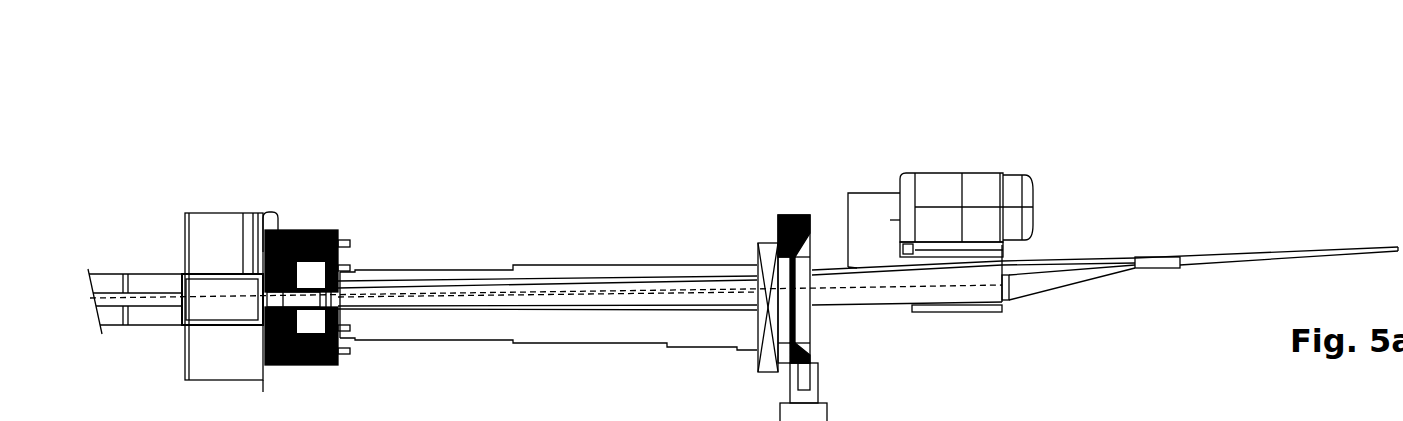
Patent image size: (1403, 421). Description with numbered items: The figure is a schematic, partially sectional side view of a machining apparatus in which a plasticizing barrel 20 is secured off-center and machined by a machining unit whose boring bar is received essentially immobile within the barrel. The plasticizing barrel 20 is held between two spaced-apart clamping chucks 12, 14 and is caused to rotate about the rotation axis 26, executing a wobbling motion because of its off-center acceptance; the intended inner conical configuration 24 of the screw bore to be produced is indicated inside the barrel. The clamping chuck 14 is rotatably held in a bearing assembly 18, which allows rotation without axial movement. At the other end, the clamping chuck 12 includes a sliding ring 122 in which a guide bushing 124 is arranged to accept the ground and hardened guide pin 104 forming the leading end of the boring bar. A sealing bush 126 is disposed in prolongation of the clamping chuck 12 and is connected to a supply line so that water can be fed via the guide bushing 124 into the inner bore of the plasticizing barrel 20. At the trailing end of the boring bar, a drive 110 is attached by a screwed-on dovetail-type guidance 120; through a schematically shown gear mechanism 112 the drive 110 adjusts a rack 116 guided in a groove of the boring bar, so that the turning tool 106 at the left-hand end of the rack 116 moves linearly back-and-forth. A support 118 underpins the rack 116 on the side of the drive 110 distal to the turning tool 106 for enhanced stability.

The clamping chuck 12 is at (287, 233).
The clamping chuck 14 is at (789, 217).
The bearing assembly 18 is at (818, 395).
The plasticizing barrel 20 is at (554, 325).
The inner conical configuration 24 is at (638, 278).
The rotation axis 26 is at (598, 292).
The guide pin 104 is at (297, 290).
The turning tool 106 is at (760, 280).
The drive 110 is at (942, 183).
The gear mechanism 112 is at (867, 412).
The rack 116 is at (1248, 253).
The support 118 is at (1165, 267).
The dovetail-type guidance 120 is at (713, 280).
The sliding ring 122 is at (302, 233).
The guide bushing 124 is at (315, 233).
The sealing bush 126 is at (217, 273).